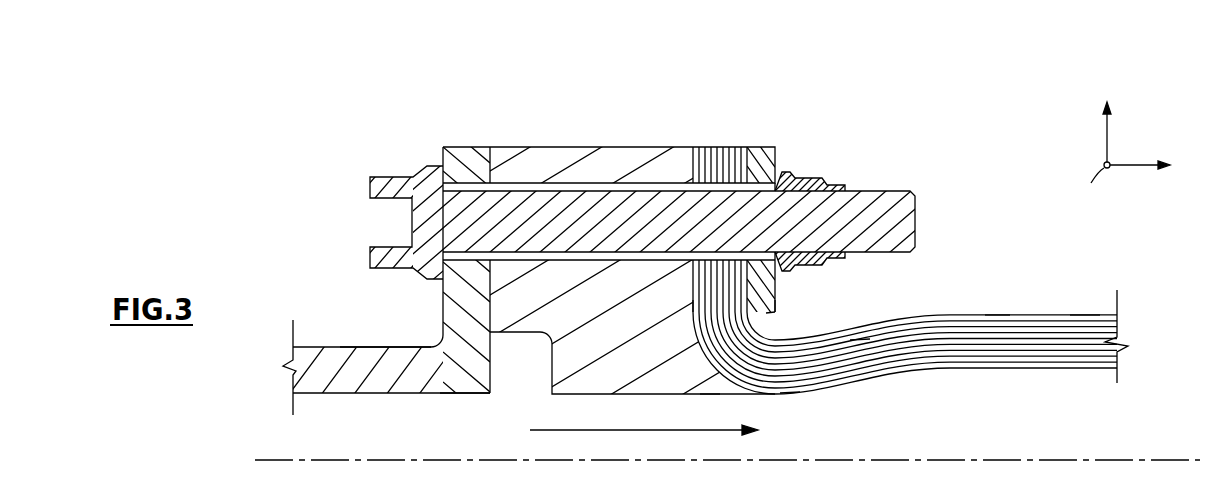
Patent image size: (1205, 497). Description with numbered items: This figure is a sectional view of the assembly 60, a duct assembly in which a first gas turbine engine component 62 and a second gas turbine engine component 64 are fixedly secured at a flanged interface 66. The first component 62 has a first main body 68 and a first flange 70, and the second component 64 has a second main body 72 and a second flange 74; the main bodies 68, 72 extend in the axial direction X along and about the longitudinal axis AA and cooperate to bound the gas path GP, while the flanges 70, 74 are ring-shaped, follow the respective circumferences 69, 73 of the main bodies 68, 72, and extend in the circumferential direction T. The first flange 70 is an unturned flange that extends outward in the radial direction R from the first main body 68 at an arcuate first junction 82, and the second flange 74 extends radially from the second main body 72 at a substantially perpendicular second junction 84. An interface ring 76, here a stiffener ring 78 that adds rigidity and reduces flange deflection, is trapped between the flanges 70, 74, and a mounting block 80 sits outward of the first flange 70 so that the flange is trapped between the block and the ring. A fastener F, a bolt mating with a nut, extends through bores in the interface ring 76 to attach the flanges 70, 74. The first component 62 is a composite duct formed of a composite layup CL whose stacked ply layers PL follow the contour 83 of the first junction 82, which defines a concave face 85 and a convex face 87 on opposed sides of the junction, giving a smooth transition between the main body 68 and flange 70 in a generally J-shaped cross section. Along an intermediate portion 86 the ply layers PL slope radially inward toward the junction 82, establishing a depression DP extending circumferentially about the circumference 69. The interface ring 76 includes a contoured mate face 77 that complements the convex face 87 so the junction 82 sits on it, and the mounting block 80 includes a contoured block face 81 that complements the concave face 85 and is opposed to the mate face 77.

The assembly 60 is at (290, 113).
The first gas turbine engine component 62 is at (1039, 298).
The second gas turbine engine component 64 is at (316, 325).
The flanged interface 66 is at (462, 72).
The first main body 68 is at (1082, 315).
The circumference 69 is at (997, 315).
The first flange 70 is at (733, 150).
The second main body 72 is at (388, 360).
The circumference 73 is at (352, 347).
The second flange 74 is at (465, 147).
The interface ring 76 is at (635, 128).
The mate face 77 is at (760, 382).
The stiffener ring 78 is at (570, 150).
The mounting block 80 is at (773, 130).
The block face 81 is at (700, 338).
The first junction 82 is at (762, 300).
The contour 83 is at (785, 350).
The second junction 84 is at (462, 375).
The concave face 85 is at (772, 338).
The intermediate portion 86 is at (860, 337).
The convex face 87 is at (710, 360).
The fastener F is at (895, 192).
The depression DP is at (841, 304).
The ply layers PL is at (916, 327).
The composite layup CL is at (970, 298).
The gas path GP is at (717, 430).
The longitudinal axis AA is at (1150, 460).
The radial direction R is at (1105, 120).
The axial direction X is at (1149, 165).
The circumferential direction T is at (1088, 182).